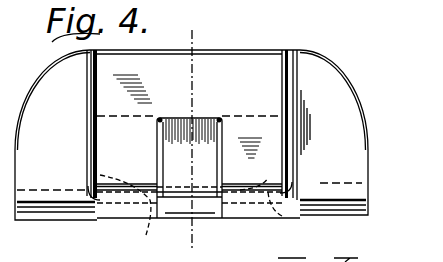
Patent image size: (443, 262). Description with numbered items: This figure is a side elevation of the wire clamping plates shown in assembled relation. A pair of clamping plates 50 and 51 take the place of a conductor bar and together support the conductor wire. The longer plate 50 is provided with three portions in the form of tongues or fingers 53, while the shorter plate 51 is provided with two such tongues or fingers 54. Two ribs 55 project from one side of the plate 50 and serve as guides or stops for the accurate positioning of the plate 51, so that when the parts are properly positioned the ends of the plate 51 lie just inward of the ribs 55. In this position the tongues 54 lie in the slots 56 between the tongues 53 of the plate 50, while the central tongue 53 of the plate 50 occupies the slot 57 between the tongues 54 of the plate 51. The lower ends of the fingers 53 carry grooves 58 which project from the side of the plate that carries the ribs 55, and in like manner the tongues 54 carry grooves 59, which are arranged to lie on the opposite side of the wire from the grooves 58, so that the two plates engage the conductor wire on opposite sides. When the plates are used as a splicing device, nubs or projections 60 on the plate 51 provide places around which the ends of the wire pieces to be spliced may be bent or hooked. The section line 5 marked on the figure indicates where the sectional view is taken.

The section line 5- 5 is at (200, 28).
The clamping plate 50 is at (322, 51).
The clamping plate 51 is at (228, 66).
The tongues or fingers 53 is at (362, 183).
The tongues or fingers 54 is at (132, 175).
The ribs 55 is at (90, 67).
The slots 56 is at (216, 118).
The slot 57 is at (160, 125).
The grooves 58 is at (53, 217).
The grooves 59 is at (103, 220).
The nubs or projections 60 is at (297, 140).